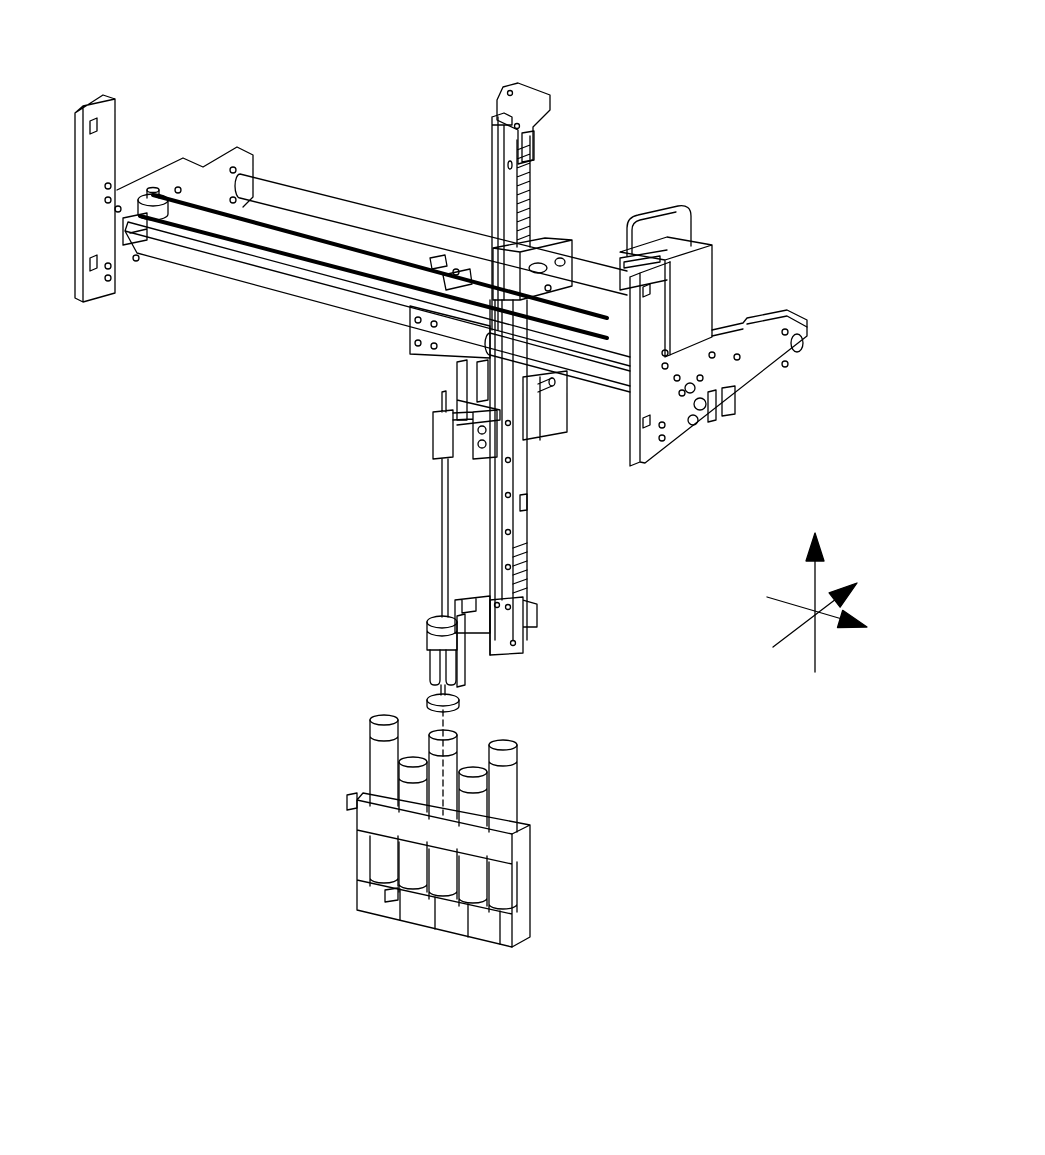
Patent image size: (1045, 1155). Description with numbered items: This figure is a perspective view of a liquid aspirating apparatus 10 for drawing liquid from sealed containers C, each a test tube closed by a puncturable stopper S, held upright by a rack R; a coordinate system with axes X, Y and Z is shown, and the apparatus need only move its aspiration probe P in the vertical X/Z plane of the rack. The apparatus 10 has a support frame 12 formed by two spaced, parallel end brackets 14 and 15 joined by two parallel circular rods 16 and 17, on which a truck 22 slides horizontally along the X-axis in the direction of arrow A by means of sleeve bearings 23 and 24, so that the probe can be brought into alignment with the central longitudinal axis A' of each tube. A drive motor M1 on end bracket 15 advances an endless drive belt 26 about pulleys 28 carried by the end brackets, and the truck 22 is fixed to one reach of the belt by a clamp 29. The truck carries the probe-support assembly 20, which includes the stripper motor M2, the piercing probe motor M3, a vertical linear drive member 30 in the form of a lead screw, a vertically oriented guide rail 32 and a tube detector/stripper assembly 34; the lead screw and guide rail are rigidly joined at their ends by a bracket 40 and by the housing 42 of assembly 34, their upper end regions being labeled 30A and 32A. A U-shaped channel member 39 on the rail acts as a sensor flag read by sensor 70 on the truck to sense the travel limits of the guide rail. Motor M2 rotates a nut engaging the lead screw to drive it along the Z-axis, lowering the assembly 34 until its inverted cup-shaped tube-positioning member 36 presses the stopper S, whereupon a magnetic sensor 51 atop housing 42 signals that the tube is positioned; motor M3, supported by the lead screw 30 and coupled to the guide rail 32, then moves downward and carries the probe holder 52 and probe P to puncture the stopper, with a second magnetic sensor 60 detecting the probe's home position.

The apparatus 10 is at (610, 178).
The support frame 12 is at (398, 195).
The end bracket 14 is at (122, 266).
The end bracket 15 is at (758, 373).
The rod 16 is at (285, 280).
The rod 17 is at (303, 187).
The probe-support assembly 20 is at (392, 412).
The truck 22 is at (390, 359).
The sleeve bearing 23 is at (492, 345).
The sleeve bearing 24 is at (563, 293).
The endless drive belt 26 is at (232, 240).
The pulley 28 is at (158, 190).
The clamp 29 is at (437, 280).
The linear drive member 30 is at (527, 562).
The lead screw nut 30A is at (525, 164).
The guide rail 32 is at (520, 608).
The Z-axis tower column 32A is at (500, 118).
The tube detector/stripper assembly 34 is at (396, 680).
The tube-positioning member 36 is at (428, 706).
The U-shaped channel member 39 is at (512, 264).
The bracket 40 is at (540, 108).
The housing 42 is at (427, 648).
The magnetic sensor 51 is at (470, 577).
The probe holder 52 is at (440, 428).
The second magnetic sensor 60 is at (475, 438).
The third magnetic sensor 70 is at (527, 387).
The arrow A is at (440, 216).
The central longitudinal axis A' is at (485, 737).
The container C is at (440, 807).
The drive motor M1 is at (702, 287).
The stripper motor M2 is at (585, 303).
The piercing probe motor M3 is at (562, 395).
The aspiration probe P is at (418, 548).
The rack R is at (550, 840).
The stopper S is at (473, 763).
The X-axis X is at (827, 625).
The Y-axis Y is at (822, 602).
The Z-axis Z is at (815, 587).